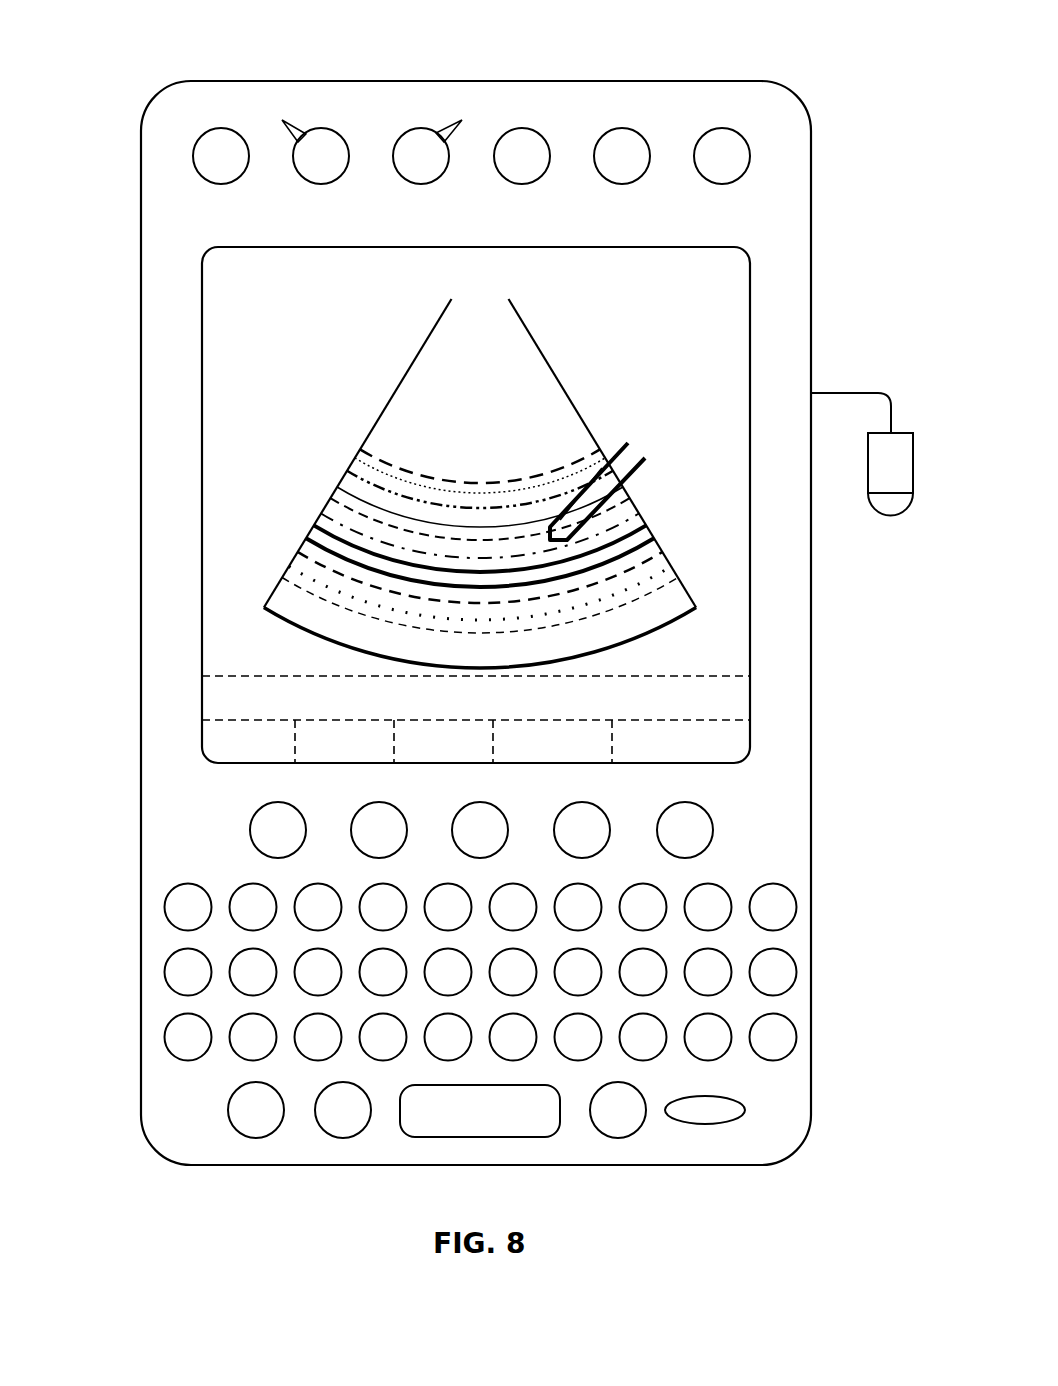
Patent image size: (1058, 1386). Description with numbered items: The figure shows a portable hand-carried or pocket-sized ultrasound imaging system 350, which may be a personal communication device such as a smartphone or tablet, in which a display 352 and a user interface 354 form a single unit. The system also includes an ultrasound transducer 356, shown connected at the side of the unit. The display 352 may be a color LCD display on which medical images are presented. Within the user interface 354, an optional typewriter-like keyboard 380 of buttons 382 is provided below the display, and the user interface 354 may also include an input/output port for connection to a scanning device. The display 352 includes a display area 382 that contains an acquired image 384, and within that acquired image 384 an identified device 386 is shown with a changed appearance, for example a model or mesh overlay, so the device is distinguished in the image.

The portable ultrasound imaging system 350 is at (148, 40).
The display 352 is at (752, 332).
The user interface 354 is at (816, 676).
The ultrasound transducer 356 is at (907, 433).
The typewriter-like keyboard 380 is at (133, 885).
The buttons / display area 382 is at (202, 445).
The acquired image 384 is at (357, 455).
The identified device 386 is at (731, 353).